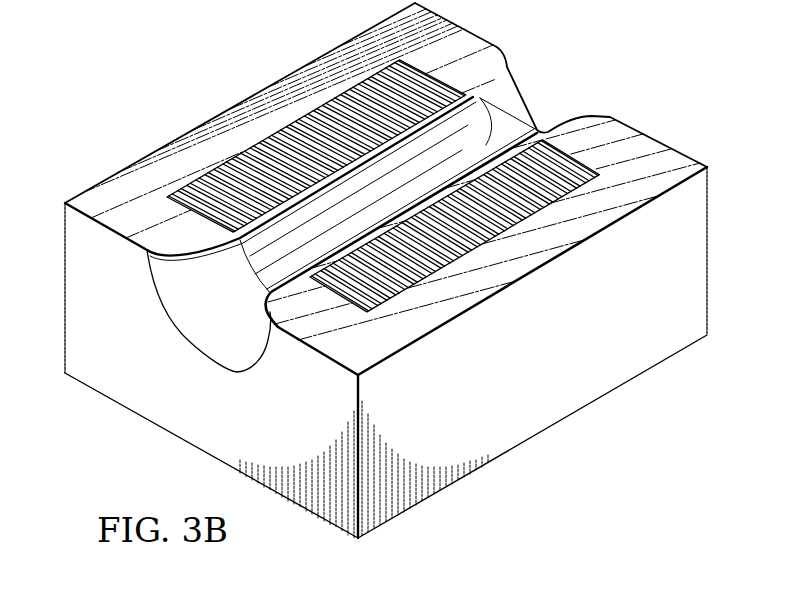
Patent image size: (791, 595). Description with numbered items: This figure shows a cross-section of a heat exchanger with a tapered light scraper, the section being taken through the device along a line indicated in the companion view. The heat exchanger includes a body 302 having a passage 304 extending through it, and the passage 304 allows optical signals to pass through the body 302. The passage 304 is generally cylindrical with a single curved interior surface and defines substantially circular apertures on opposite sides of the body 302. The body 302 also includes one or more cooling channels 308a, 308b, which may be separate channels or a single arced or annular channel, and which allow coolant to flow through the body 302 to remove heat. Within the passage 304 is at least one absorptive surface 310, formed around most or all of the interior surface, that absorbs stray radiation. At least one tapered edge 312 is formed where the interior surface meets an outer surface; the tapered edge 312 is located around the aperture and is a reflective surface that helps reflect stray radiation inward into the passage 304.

The body 302 is at (198, 140).
The passage 304 is at (575, 95).
The cooling channel 308a is at (280, 133).
The cooling channel 308b is at (497, 238).
The absorptive surface 310 is at (483, 145).
The tapered edge 312 is at (210, 332).